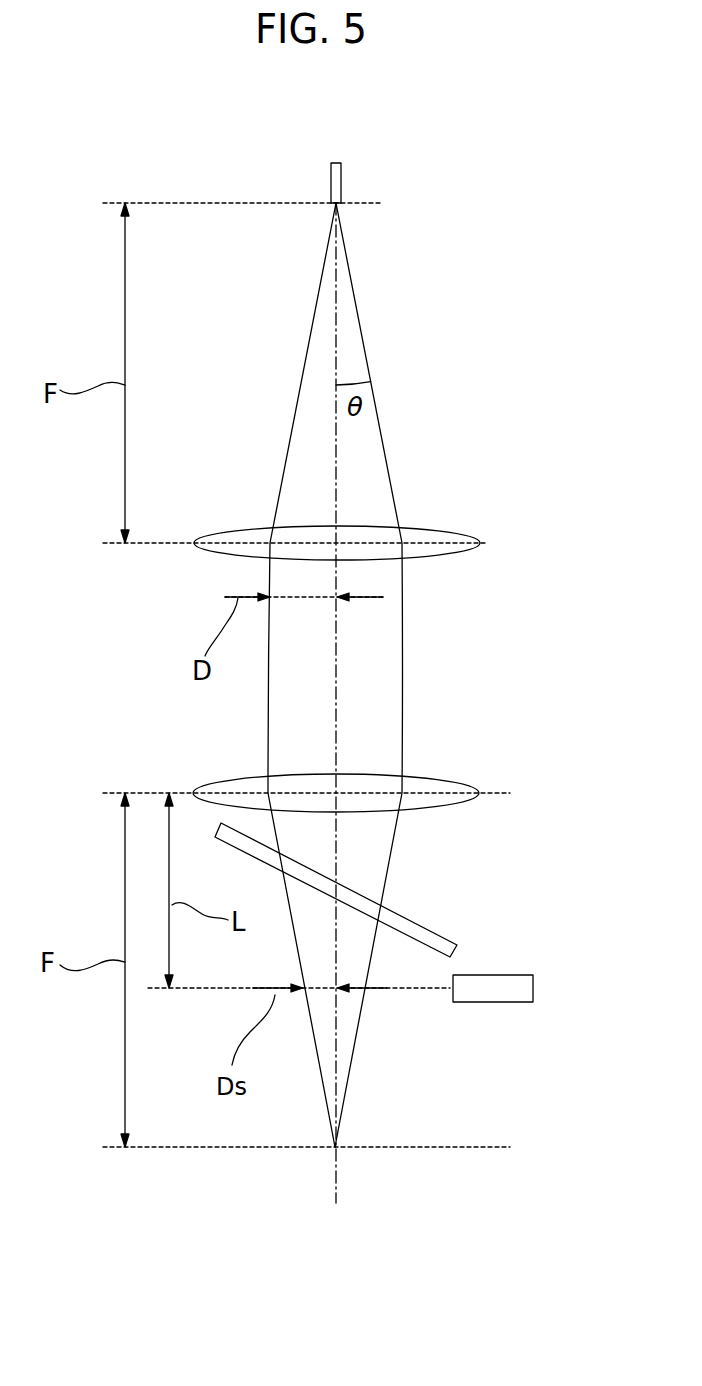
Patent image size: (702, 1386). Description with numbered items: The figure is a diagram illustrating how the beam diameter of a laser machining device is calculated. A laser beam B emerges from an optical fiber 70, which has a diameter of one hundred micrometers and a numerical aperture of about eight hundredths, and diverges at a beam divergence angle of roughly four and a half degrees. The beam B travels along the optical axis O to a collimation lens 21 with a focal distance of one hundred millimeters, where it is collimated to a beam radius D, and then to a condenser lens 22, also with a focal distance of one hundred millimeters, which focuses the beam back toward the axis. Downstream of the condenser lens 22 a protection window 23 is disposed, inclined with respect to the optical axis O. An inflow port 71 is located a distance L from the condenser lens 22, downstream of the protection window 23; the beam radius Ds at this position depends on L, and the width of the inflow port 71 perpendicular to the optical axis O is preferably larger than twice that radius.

The optical fiber 70 is at (343, 175).
The collimation lens 21 is at (443, 530).
The condenser lens 22 is at (447, 782).
The protection window 23 is at (418, 922).
The inflow port 71 is at (515, 975).
The laser beam B is at (402, 650).
The optical axis O is at (336, 1197).